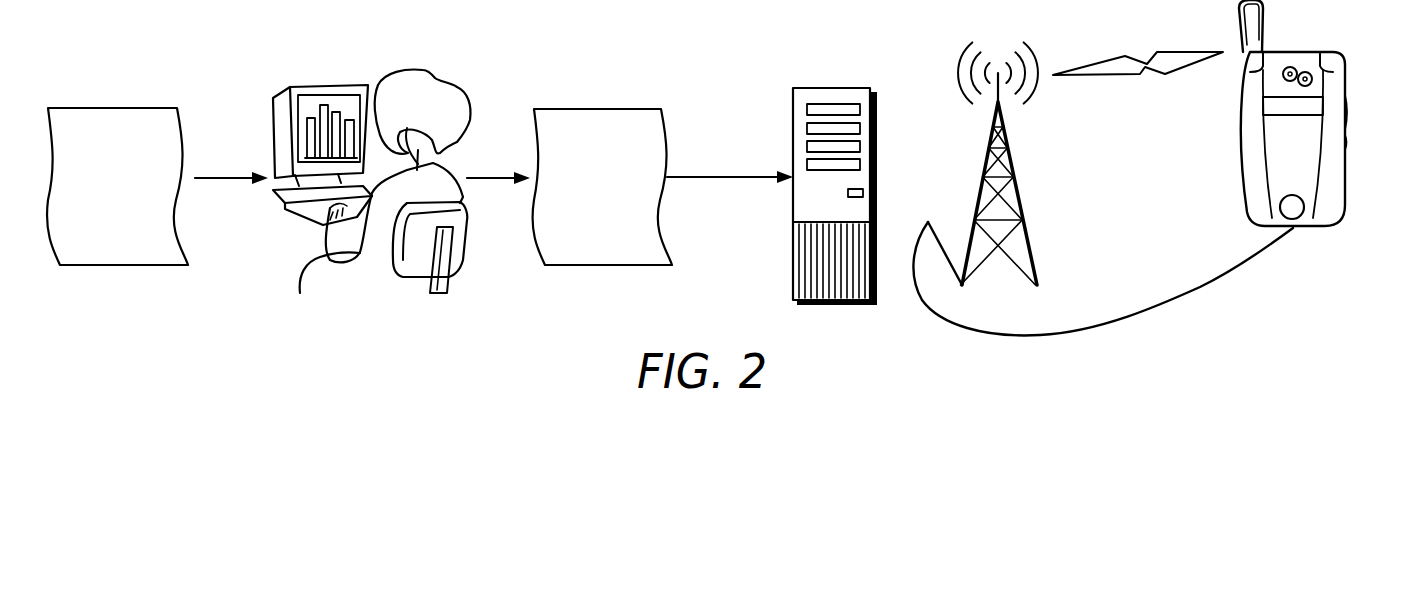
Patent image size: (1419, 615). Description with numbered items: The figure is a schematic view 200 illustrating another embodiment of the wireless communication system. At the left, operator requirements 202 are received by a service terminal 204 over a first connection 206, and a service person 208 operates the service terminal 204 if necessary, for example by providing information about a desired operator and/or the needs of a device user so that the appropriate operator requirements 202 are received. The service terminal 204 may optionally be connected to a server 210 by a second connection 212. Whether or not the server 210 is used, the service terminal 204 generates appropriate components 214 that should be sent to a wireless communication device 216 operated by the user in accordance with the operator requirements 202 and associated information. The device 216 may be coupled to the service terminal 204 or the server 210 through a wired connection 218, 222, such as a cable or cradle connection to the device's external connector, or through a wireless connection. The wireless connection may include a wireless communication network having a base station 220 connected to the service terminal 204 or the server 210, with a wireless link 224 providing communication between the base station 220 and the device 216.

The schematic view 200 is at (1250, 346).
The operator requirements 202 is at (80, 108).
The service terminal 204 is at (328, 86).
The first connection 206 is at (220, 177).
The service person 208 is at (422, 72).
The server 210 is at (831, 88).
The second connection 212 is at (490, 177).
The components 214 is at (597, 108).
The wireless communication device 216 is at (1345, 145).
The wired connection 218 is at (1203, 290).
The base station 220 is at (1020, 195).
The wired connection 222 is at (938, 232).
The wireless link 224 is at (1137, 78).